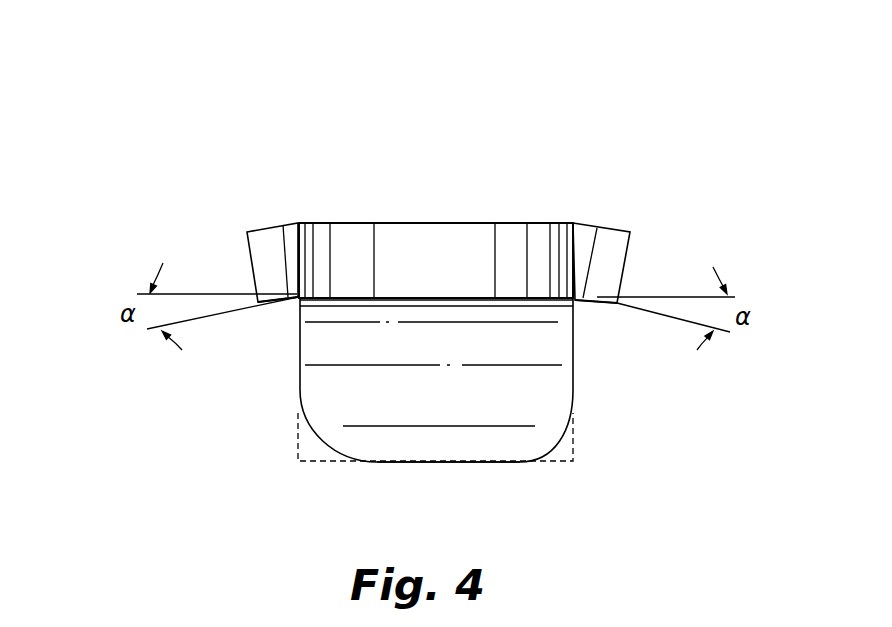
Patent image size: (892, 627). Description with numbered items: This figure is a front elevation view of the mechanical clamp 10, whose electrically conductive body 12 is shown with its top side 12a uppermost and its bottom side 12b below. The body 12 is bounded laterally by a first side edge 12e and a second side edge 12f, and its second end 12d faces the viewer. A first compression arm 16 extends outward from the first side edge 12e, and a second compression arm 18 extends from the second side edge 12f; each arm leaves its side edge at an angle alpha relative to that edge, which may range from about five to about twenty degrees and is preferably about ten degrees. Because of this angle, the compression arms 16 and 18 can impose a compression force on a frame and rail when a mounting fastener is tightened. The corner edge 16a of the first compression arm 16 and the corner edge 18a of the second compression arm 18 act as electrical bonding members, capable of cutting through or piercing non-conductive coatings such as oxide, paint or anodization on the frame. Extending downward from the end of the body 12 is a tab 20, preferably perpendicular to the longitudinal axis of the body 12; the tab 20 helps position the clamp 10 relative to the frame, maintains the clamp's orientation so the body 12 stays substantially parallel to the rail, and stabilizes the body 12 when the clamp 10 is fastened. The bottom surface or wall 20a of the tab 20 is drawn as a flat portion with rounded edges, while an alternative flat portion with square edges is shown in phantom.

The clamp 10 is at (532, 117).
The electrically conductive body 12 is at (345, 212).
The top side 12a is at (460, 223).
The bottom side 12b is at (360, 300).
The second end 12d is at (422, 265).
The first side edge 12e is at (297, 256).
The second side edge 12f is at (577, 254).
The first compression arm 16 is at (236, 246).
The corner edge of first compression arm 16a is at (257, 298).
The second compression arm 18 is at (643, 246).
The corner edge of second compression arm 18a is at (617, 300).
The tab 20 is at (580, 398).
The bottom surface or wall of the tab 20a is at (420, 463).